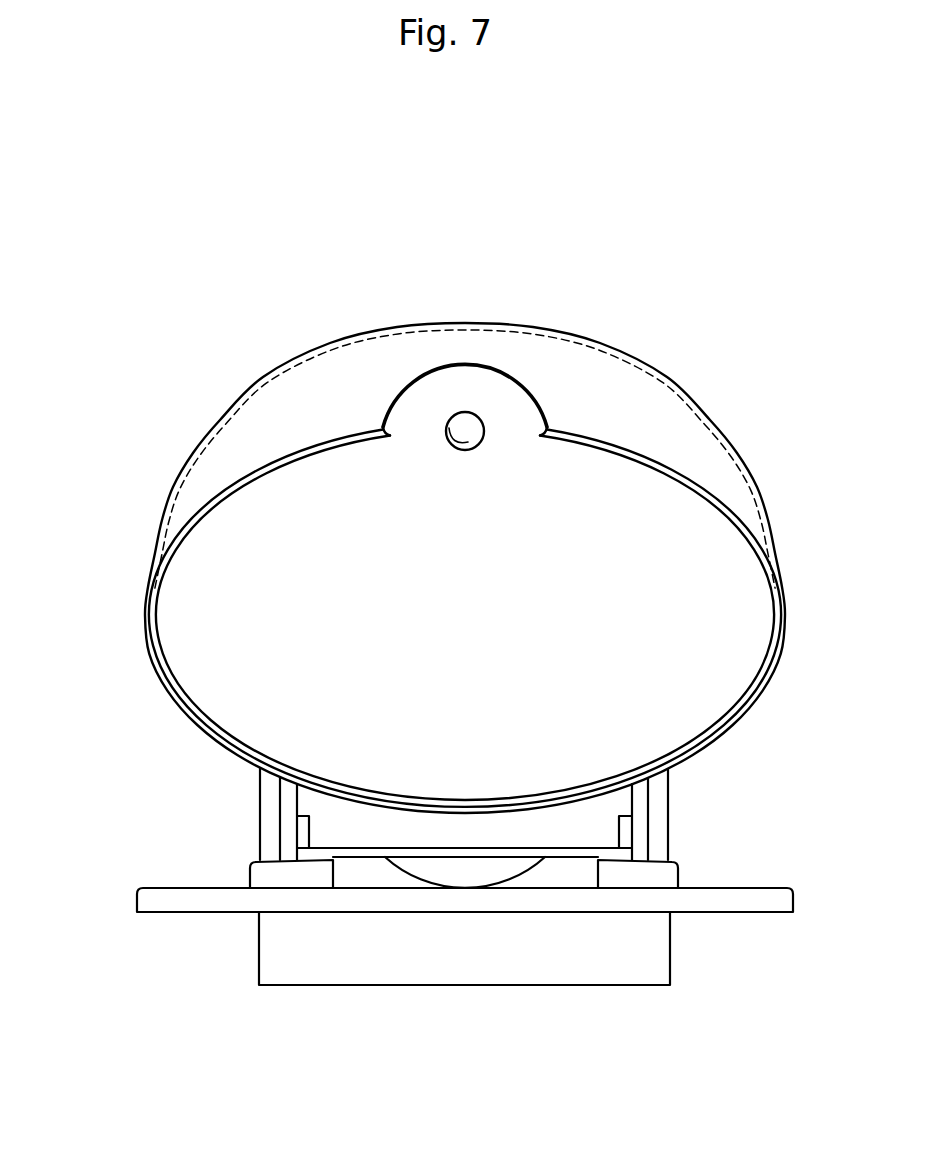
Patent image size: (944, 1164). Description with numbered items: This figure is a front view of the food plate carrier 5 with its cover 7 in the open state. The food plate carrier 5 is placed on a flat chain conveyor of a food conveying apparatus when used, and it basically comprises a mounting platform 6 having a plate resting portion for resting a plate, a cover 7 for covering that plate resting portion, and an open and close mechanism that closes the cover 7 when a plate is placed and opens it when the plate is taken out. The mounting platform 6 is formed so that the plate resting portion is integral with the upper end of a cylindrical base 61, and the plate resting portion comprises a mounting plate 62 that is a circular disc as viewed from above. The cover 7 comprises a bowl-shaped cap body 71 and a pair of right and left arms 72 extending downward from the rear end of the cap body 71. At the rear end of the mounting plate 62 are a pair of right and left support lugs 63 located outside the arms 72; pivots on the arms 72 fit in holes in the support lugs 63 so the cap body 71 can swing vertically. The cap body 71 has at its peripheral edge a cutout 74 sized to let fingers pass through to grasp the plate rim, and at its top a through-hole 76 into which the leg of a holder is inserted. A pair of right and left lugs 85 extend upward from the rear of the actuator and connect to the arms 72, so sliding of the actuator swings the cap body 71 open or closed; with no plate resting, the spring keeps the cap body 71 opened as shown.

The food plate carrier 5 is at (211, 333).
The mounting platform 6 is at (124, 888).
The cover 7 is at (636, 345).
The cylindrical base 61 is at (670, 957).
The mounting plate 62 is at (772, 888).
The support lugs 63 is at (263, 790).
The cap body 71 is at (192, 450).
The arms 72 is at (285, 815).
The cutout 74 is at (503, 405).
The through-hole 76 is at (443, 433).
The lugs 85 is at (302, 833).